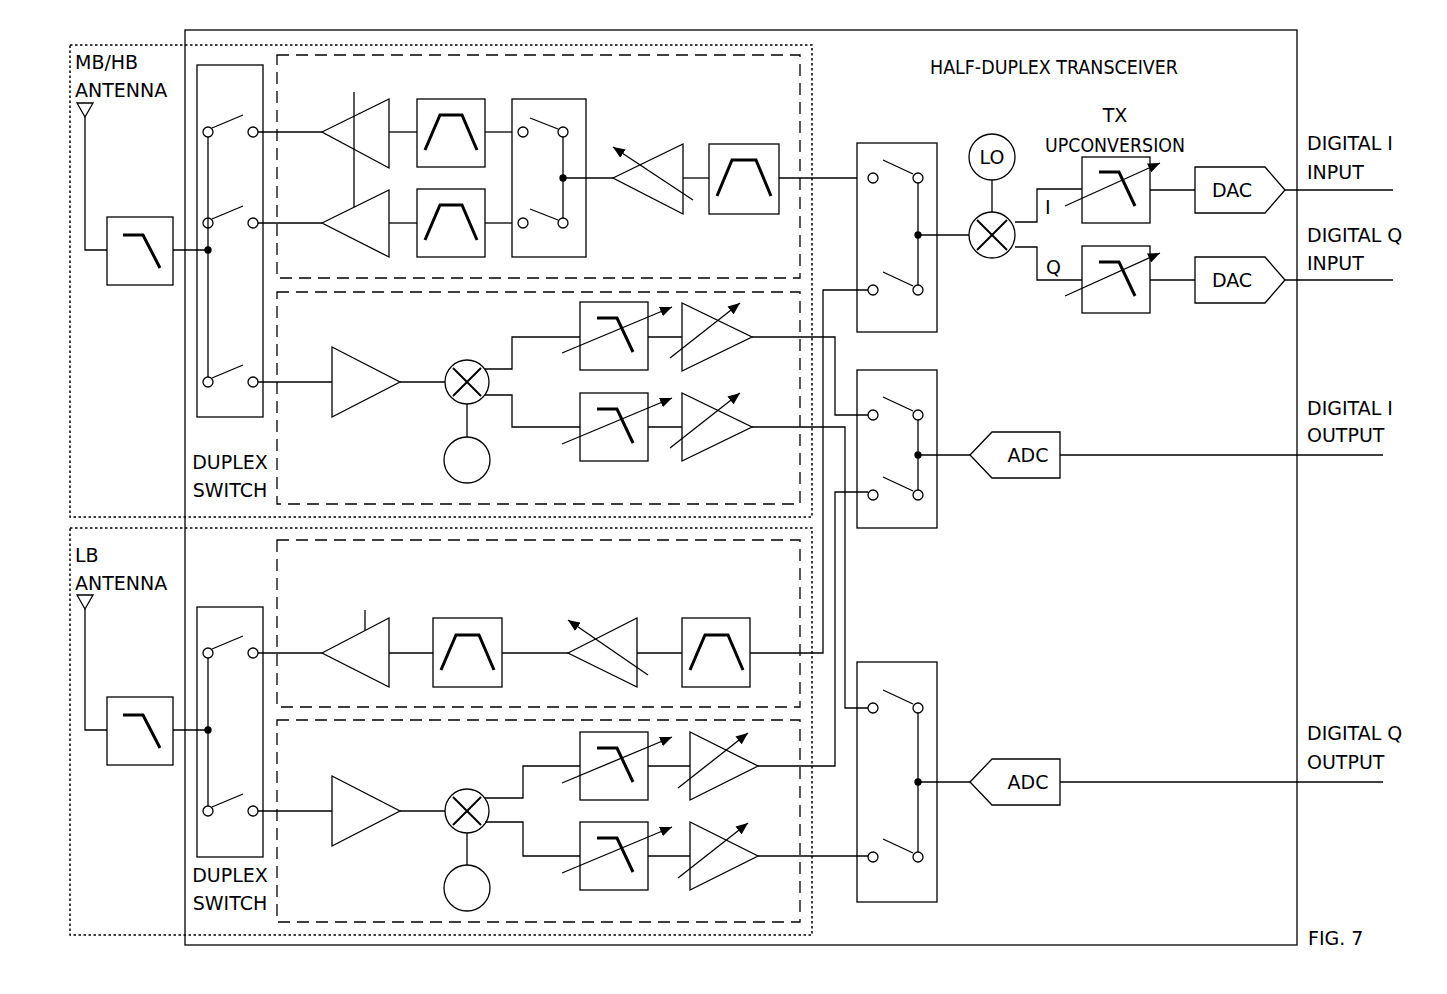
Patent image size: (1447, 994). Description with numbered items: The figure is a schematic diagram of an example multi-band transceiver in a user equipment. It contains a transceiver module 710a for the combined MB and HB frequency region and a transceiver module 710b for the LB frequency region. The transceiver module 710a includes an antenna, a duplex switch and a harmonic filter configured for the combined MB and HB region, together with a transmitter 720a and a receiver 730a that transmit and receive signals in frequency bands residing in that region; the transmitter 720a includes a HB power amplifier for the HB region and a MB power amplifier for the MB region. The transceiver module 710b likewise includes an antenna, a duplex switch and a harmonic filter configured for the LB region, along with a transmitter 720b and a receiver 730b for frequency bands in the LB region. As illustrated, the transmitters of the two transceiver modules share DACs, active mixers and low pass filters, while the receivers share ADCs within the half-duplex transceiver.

The transceiver module 710a is at (102, 466).
The transceiver module 710b is at (102, 908).
The transmitter 720a is at (790, 121).
The transmitter 720b is at (565, 605).
The receiver 730a is at (772, 498).
The receiver 730b is at (507, 760).